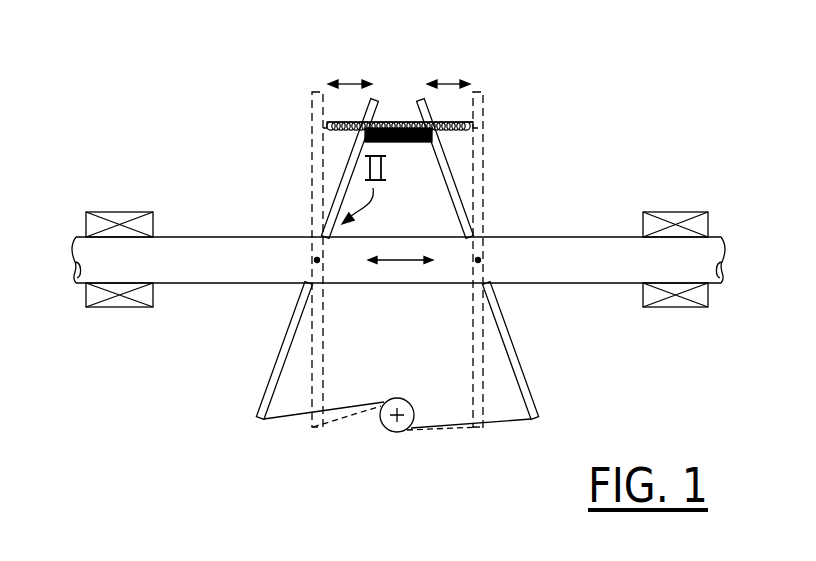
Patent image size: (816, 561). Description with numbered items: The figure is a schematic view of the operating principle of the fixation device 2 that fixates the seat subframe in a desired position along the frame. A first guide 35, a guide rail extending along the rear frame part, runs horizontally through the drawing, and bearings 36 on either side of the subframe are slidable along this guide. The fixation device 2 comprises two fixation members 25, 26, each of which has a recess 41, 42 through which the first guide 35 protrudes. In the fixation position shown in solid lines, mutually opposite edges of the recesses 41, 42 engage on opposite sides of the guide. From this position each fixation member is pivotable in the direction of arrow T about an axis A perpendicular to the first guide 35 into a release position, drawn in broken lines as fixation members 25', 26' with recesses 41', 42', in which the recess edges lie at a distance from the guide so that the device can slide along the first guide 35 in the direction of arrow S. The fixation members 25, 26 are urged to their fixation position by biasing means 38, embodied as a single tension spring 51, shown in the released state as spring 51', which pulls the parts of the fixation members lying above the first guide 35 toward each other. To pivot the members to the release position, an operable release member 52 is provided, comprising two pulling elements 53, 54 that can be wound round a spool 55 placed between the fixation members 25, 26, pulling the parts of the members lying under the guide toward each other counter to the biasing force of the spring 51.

The fixation device 2 is at (398, 302).
The fixation member 25 is at (241, 351).
The fixation member in release position 25' is at (371, 259).
The fixation member 26 is at (558, 351).
The fixation member in release position 26' is at (530, 257).
The first guide 35 is at (575, 268).
The bearings 36 is at (118, 307).
The biasing means 38 is at (405, 152).
The recess 41 is at (264, 297).
The recess in release position 41' is at (283, 169).
The recess 42 is at (497, 169).
The recess in release position 42' is at (542, 239).
The tension spring 51 is at (361, 158).
The tension spring in release position 51' is at (511, 91).
The release member 52 is at (397, 439).
The pulling element 53 is at (290, 418).
The pulling element 54 is at (503, 430).
The spool 55 is at (407, 402).